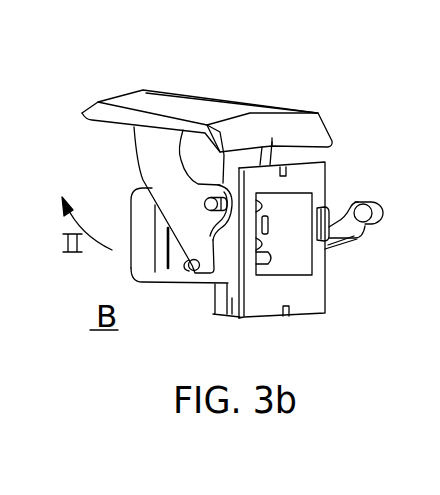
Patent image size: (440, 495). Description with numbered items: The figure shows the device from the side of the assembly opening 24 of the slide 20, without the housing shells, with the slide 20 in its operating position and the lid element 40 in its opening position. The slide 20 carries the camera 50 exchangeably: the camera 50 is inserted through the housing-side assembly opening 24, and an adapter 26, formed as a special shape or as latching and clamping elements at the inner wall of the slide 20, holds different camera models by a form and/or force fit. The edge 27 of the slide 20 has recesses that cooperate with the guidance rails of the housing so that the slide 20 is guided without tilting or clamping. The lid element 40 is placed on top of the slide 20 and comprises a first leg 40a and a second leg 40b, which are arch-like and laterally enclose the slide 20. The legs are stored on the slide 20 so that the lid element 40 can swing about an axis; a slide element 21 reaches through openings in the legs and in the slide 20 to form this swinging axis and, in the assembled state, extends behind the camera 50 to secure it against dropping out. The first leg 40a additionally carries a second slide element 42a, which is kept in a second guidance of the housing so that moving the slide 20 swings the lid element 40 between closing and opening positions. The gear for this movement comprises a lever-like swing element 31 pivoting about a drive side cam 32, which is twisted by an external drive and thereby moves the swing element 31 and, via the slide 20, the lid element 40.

The slide 20 is at (300, 172).
The slide element 21 is at (195, 271).
The assembly opening 24 is at (290, 207).
The adapter 26 is at (274, 256).
The edge of the slide 27 is at (297, 318).
The swing element 31 is at (357, 222).
The drive side cam 32 is at (383, 208).
The lid element 40 is at (173, 102).
The first leg 40a is at (162, 152).
The second leg 40b is at (242, 158).
The second slide element 42a is at (205, 205).
The camera 50 is at (137, 220).